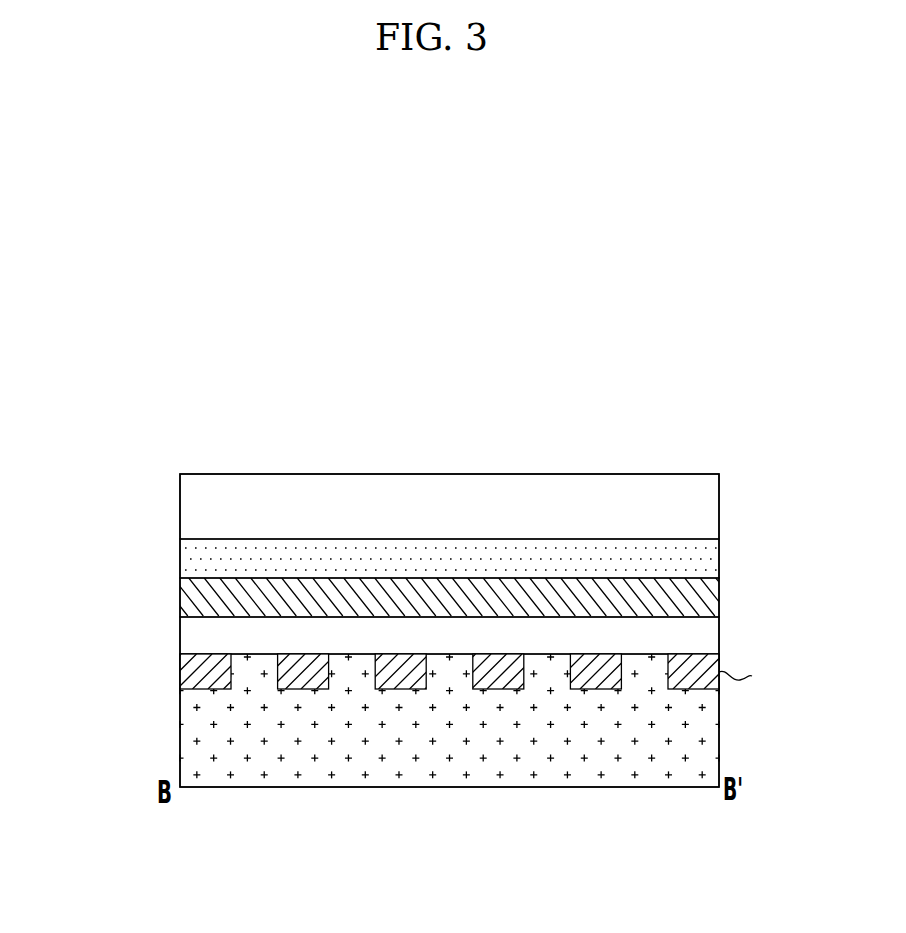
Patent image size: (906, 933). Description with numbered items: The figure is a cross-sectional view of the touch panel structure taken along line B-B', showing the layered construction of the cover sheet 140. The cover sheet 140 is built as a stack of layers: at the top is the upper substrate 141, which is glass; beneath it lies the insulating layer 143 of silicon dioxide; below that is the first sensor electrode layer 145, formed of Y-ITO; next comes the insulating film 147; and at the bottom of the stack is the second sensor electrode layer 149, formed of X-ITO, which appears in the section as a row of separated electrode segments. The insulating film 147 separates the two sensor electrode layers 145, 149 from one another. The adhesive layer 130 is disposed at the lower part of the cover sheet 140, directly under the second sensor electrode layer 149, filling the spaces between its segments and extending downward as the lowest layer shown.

The adhesive layer 130 is at (719, 748).
The cover sheet 140 is at (420, 582).
The upper substrate 141 is at (183, 509).
The insulating layer 143 is at (183, 560).
The first sensor electrode layer 145 is at (183, 598).
The insulating film 147 is at (183, 636).
The second sensor electrode layer 149 is at (459, 672).